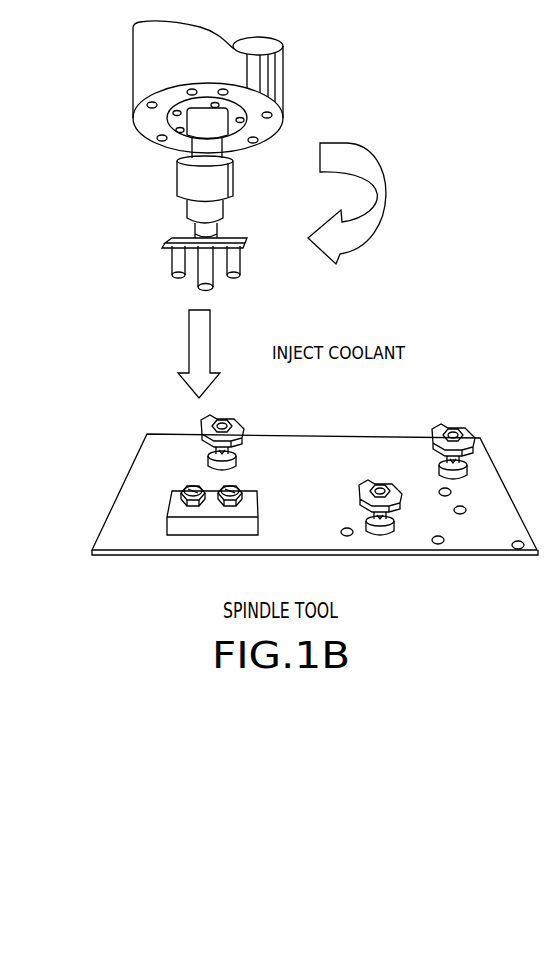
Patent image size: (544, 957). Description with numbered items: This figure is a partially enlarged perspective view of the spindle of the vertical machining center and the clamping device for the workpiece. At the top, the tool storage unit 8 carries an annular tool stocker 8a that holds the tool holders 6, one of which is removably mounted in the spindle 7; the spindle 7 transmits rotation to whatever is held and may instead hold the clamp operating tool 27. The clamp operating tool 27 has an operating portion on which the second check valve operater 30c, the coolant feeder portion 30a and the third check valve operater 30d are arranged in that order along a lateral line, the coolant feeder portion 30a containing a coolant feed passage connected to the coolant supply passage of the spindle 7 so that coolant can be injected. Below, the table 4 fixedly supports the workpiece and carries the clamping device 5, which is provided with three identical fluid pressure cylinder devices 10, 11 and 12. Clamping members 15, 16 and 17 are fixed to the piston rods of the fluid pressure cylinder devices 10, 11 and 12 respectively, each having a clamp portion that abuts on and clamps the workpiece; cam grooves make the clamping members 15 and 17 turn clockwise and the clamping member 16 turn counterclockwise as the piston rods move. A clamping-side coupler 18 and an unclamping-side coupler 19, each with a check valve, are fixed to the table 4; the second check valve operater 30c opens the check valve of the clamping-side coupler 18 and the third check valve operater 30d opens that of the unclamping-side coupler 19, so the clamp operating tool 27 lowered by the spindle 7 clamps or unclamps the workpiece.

The tool storage unit 8 is at (227, 101).
The annular tool stocker 8a is at (147, 132).
The spindle 7 is at (180, 180).
The tool holder 6 is at (197, 210).
The clamp operating tool 27 is at (178, 283).
The coolant feeder portion 30a is at (210, 286).
The second check valve operater 30c is at (172, 274).
The third check valve operater 30d is at (240, 266).
The clamping device 5 is at (315, 465).
The table 4 is at (150, 533).
The clamping member 17 is at (257, 426).
The clamping member 16 is at (433, 410).
The clamping member 15 is at (385, 516).
The fluid pressure cylinder device 12 is at (233, 453).
The fluid pressure cylinder device 11 is at (438, 466).
The fluid pressure cylinder device 10 is at (387, 530).
The clamping-side coupler 18 is at (190, 483).
The unclamping-side coupler 19 is at (237, 482).